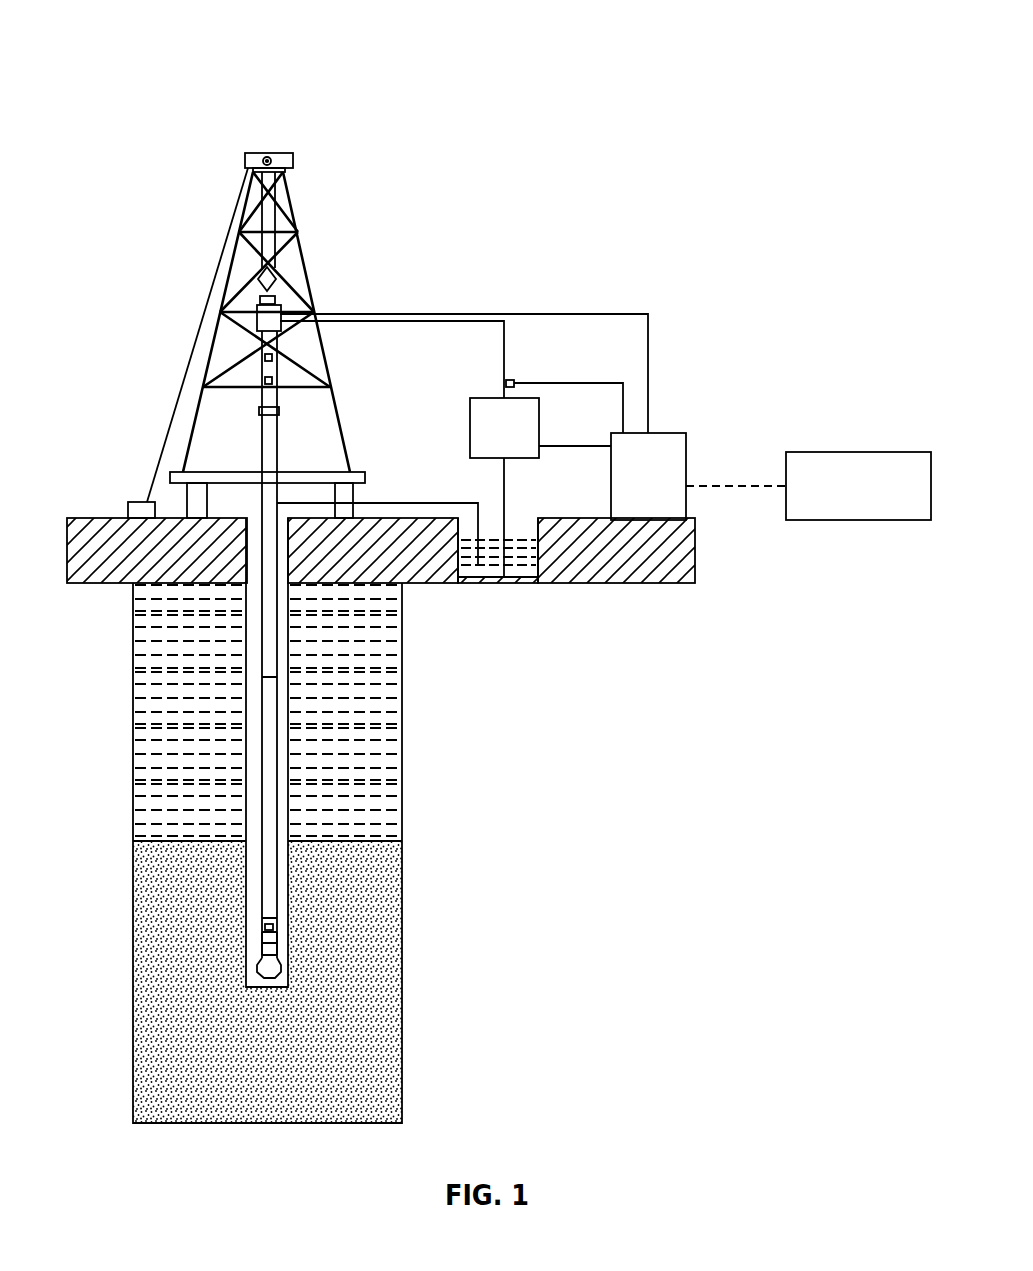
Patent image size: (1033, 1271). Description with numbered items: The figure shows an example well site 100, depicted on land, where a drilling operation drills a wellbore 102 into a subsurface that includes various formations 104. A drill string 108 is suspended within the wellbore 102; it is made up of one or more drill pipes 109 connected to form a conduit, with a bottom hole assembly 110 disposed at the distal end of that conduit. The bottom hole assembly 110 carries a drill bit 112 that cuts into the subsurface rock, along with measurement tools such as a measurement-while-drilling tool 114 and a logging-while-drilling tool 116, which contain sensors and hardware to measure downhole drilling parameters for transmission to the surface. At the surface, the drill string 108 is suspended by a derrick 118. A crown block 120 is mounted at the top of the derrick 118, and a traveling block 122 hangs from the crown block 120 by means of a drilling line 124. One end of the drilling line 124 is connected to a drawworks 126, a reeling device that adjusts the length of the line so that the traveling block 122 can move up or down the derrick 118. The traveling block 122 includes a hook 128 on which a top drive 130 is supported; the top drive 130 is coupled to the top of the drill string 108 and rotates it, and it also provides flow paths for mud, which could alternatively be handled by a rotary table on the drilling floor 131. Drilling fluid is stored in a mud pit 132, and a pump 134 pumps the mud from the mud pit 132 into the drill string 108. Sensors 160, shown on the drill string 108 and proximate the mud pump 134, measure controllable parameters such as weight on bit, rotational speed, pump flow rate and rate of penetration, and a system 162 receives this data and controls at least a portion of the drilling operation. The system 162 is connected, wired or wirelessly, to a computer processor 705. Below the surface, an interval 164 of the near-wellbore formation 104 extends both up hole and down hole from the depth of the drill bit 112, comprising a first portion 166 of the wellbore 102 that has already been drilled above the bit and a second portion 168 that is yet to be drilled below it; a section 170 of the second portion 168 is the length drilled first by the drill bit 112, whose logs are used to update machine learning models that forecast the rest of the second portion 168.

The well site 100 is at (127, 47).
The wellbore 102 is at (282, 697).
The formation 104 is at (382, 652).
The drill string 108 is at (263, 797).
The drill pipe 109 is at (270, 670).
The bottom hole assembly 110 is at (247, 928).
The drill bit 112 is at (277, 975).
The measurement-while-drilling tool 114 is at (277, 927).
The logging-while-drilling tool 116 is at (277, 944).
The derrick 118 is at (300, 251).
The crown block 120 is at (267, 153).
The traveling block 122 is at (282, 288).
The drilling line 124 is at (277, 221).
The drawworks 126 is at (140, 500).
The hook 128 is at (260, 298).
The top drive 130 is at (257, 313).
The drilling floor 131 is at (323, 470).
The mud pit 132 is at (538, 520).
The pump 134 is at (540, 421).
The sensor 160 is at (273, 356).
The system 162 is at (657, 433).
The interval 164 is at (242, 932).
The first portion 166 is at (488, 932).
The second portion 168 is at (488, 1007).
The section 170 is at (290, 993).
The computer processor 705 is at (863, 452).